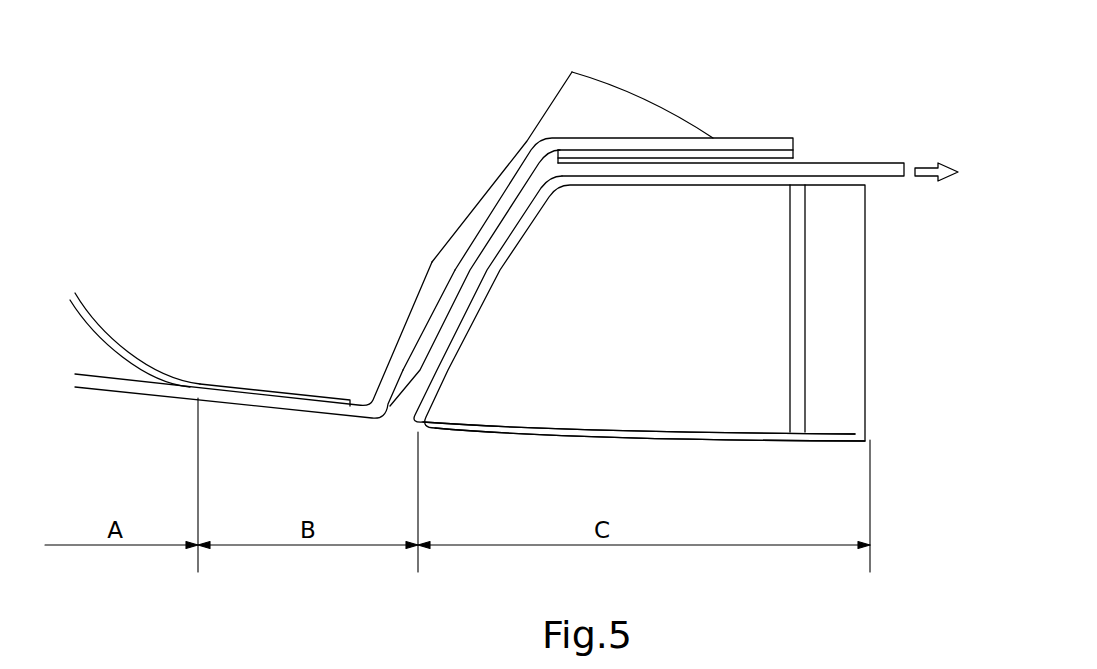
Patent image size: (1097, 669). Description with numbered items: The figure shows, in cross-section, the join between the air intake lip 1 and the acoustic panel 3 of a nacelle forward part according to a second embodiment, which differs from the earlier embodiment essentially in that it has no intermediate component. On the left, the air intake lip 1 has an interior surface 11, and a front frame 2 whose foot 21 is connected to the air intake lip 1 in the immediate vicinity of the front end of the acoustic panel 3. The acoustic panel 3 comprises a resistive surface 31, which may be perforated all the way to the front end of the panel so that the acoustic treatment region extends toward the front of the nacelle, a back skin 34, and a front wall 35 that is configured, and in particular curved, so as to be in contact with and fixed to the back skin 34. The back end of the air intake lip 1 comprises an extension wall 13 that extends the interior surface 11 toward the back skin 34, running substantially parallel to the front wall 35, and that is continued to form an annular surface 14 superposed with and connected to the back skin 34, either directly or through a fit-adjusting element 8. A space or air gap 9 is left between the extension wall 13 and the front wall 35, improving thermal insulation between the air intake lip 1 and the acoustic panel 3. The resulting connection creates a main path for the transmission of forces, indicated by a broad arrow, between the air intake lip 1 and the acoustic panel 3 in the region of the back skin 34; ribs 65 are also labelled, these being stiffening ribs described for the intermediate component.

The air intake lip 1 is at (223, 400).
The interior surface 11 is at (263, 413).
The front frame 2 is at (118, 347).
The foot 21 is at (255, 395).
The ribs 65 is at (576, 84).
The fit-adjusting element 8 is at (625, 152).
The extension wall 13 is at (470, 255).
The air gap 9 is at (502, 222).
The annular surface 14 is at (673, 145).
The back skin 34 is at (840, 166).
The front wall 35 is at (488, 292).
The acoustic panel 3 is at (840, 268).
The resistive surface 31 is at (700, 436).